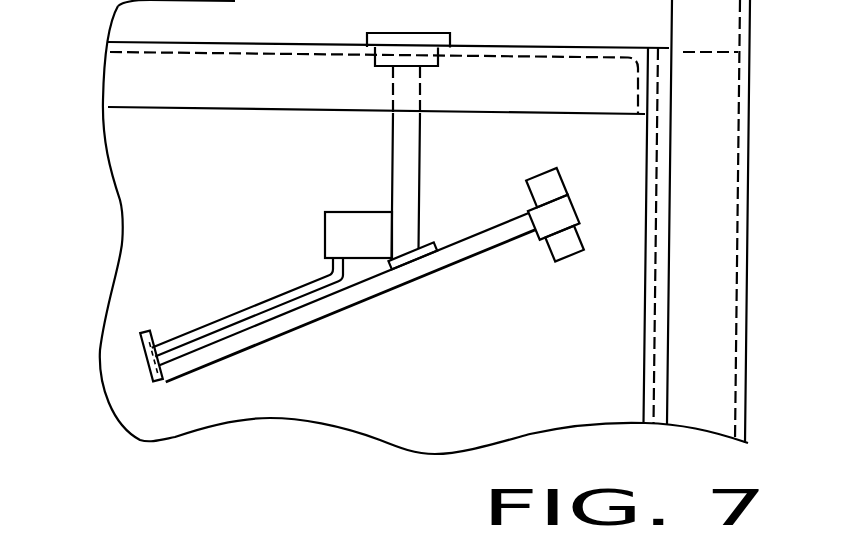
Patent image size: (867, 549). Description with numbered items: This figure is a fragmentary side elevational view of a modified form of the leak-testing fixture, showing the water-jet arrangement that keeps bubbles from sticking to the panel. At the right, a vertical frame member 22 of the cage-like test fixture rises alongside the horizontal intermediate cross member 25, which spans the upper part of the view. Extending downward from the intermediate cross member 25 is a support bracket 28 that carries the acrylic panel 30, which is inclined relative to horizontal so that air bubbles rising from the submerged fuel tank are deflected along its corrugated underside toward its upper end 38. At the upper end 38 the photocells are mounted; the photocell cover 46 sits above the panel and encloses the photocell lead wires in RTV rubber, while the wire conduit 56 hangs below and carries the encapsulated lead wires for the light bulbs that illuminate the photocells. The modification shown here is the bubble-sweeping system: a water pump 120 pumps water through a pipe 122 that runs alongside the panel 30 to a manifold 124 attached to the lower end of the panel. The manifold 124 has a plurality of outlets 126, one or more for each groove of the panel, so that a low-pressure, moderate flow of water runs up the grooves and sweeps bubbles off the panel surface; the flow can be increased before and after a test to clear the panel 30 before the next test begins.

The vertical frame members 22 is at (718, 220).
The intermediate cross member 25 is at (232, 72).
The support brackets 28 is at (400, 146).
The acrylic panel 30 is at (348, 290).
The upper end 38 is at (575, 210).
The photocell cover 46 is at (542, 183).
The wire conduit 56 is at (569, 256).
The water pump 120 is at (325, 214).
The pipe 122 is at (212, 313).
The manifold 124 is at (143, 347).
The outlets 126 is at (163, 378).